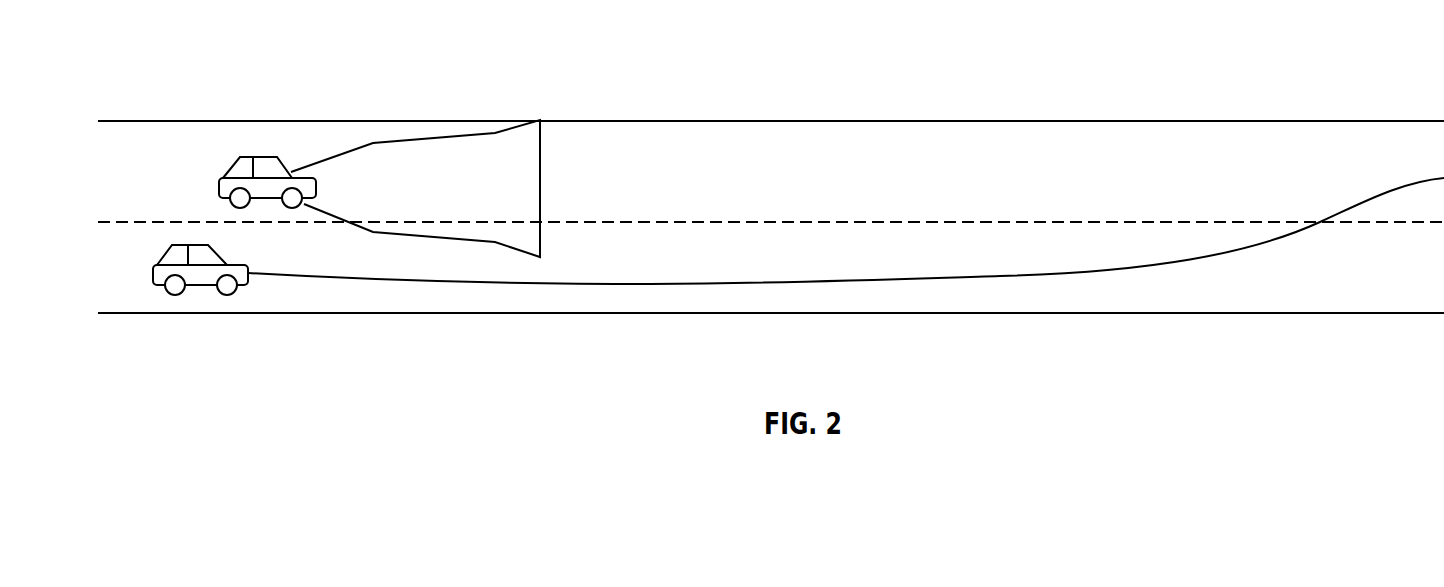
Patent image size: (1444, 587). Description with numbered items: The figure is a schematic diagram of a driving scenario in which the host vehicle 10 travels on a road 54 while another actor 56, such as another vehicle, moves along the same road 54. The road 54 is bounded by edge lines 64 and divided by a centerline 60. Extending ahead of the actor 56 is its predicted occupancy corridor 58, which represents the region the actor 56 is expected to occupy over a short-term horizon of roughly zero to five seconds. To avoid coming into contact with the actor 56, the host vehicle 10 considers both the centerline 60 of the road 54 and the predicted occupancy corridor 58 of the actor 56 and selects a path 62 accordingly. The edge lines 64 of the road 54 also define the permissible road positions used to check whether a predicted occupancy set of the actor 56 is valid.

The host vehicle 10 is at (203, 287).
The road 54 is at (1303, 120).
The actor 56 is at (253, 158).
The occupancy corridor 58 is at (462, 135).
The centerline 60 is at (733, 222).
The path 62 is at (963, 282).
The edge lines 64 is at (1122, 120).